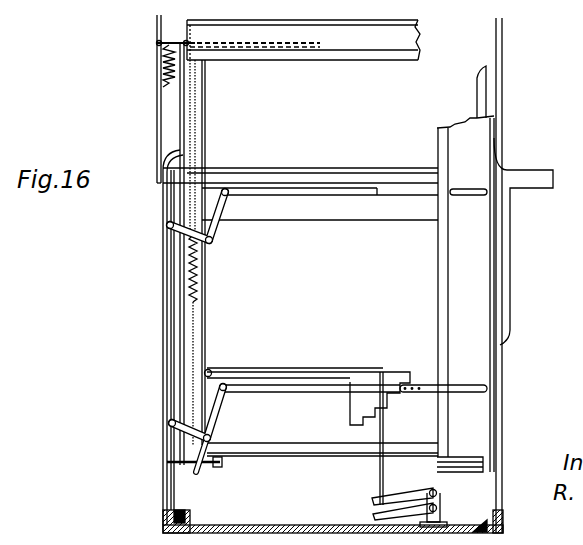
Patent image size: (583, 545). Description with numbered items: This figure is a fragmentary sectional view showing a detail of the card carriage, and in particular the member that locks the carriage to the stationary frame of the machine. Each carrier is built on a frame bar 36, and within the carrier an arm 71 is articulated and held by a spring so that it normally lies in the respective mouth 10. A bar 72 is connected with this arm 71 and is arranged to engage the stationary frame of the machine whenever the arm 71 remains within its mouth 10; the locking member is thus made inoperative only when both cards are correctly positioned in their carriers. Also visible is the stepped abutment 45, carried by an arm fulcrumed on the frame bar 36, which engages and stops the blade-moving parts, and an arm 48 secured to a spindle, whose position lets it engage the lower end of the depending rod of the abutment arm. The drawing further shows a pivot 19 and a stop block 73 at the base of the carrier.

The mouth 10 is at (342, 42).
The arm 71 is at (258, 47).
The bar 72 is at (184, 106).
The frame bar 36 is at (200, 326).
The stepped abutment 45 is at (395, 378).
The arm 48 is at (398, 498).
The bracket 19 is at (466, 470).
The stop block 73 is at (187, 514).